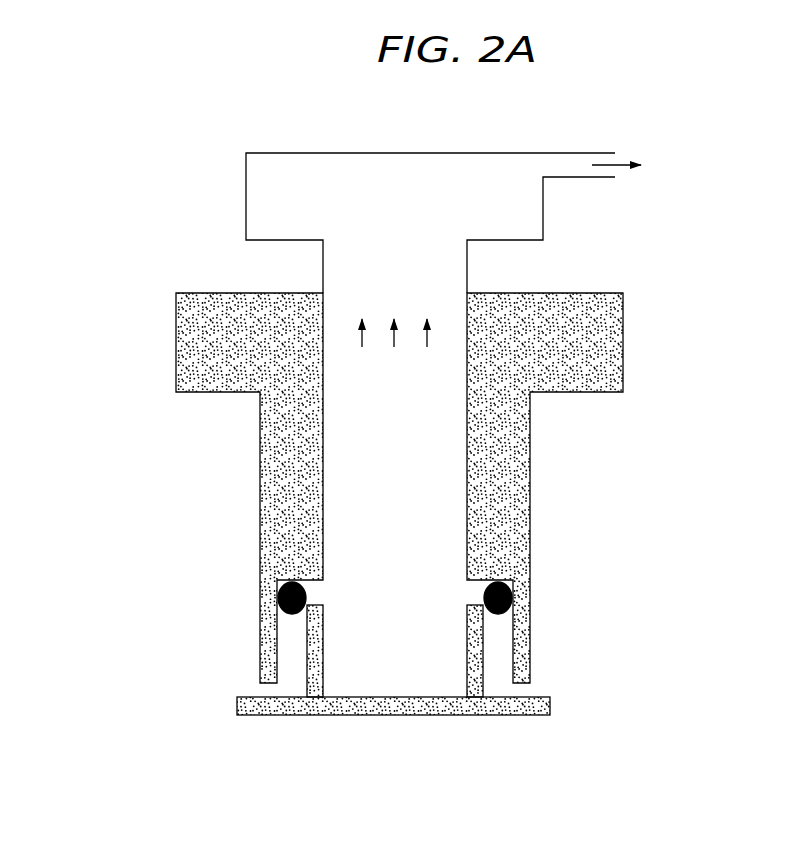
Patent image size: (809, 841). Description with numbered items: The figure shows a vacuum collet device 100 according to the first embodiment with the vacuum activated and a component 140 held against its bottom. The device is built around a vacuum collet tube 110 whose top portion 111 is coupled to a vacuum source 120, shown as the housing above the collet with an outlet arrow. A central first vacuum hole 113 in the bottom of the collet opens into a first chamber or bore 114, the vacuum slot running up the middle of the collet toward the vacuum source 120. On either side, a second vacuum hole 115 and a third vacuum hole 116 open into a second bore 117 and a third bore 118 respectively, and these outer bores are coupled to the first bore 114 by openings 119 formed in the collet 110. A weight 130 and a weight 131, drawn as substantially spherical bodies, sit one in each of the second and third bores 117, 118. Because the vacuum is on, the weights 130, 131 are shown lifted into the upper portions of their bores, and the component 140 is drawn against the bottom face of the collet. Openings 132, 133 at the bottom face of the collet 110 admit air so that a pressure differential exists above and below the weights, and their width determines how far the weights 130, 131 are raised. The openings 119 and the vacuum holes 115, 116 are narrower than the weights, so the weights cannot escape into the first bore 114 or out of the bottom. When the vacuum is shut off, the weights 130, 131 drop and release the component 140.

The vacuum collet device 100 is at (682, 222).
The vacuum collet tube 110 is at (515, 492).
The top portion 111 is at (472, 289).
The first vacuum hole 113 is at (397, 673).
The first chamber or bore 114 is at (410, 473).
The second vacuum hole 115 is at (288, 686).
The third vacuum hole 116 is at (500, 686).
The second chamber or bore 117 is at (292, 648).
The third chamber or bore 118 is at (498, 647).
The openings 119 is at (324, 592).
The vacuum source 120 is at (265, 198).
The weight 130 is at (268, 602).
The weight 131 is at (515, 602).
The opening 132 is at (252, 687).
The opening 133 is at (539, 688).
The component 140 is at (552, 707).